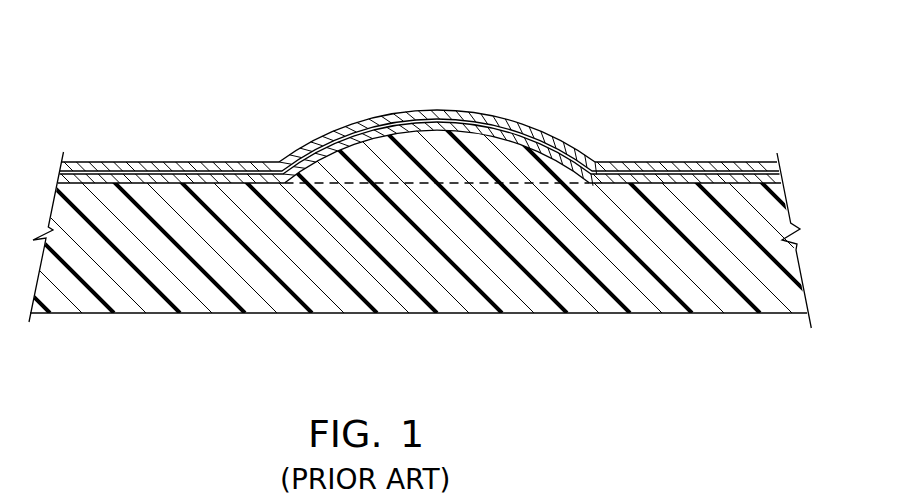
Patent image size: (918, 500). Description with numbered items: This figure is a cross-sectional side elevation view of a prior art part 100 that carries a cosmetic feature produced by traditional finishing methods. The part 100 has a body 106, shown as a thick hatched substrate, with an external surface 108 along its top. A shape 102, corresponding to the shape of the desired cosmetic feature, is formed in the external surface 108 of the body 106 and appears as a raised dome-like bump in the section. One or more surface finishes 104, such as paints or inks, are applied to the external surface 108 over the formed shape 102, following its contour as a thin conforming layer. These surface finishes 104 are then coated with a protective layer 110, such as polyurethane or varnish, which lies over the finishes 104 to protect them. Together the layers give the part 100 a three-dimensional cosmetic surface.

The part 100 is at (459, 164).
The shape 102 is at (436, 140).
The surface finishes 104 is at (643, 180).
The body 106 is at (698, 210).
The external surface 108 is at (183, 170).
The protective layer 110 is at (290, 157).